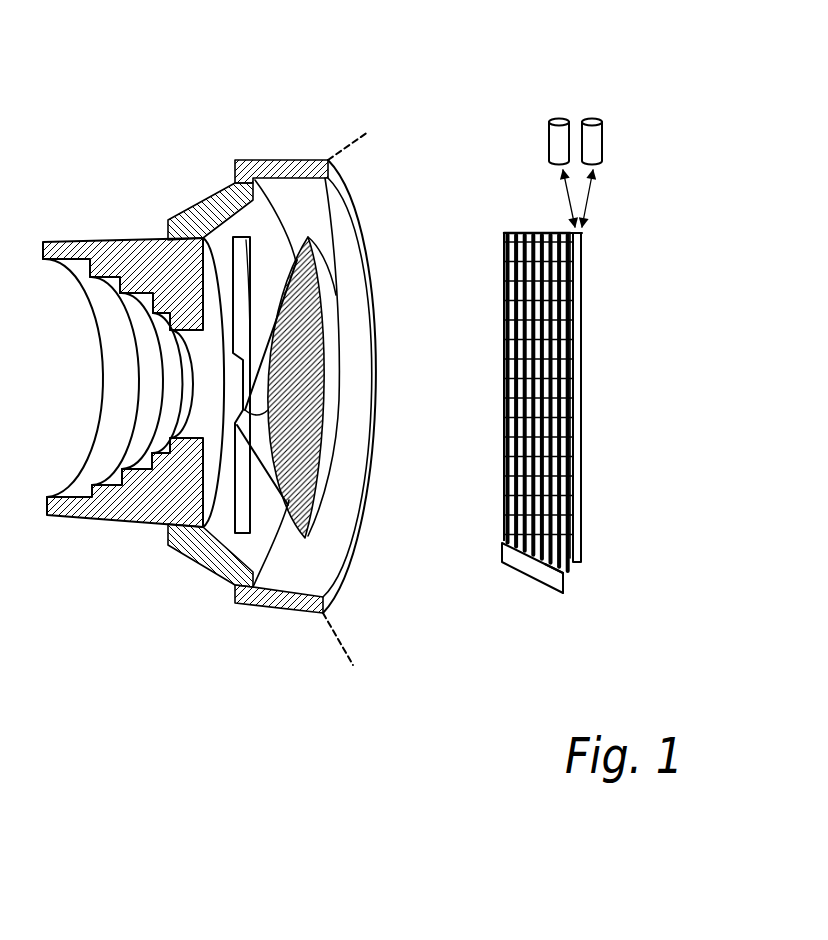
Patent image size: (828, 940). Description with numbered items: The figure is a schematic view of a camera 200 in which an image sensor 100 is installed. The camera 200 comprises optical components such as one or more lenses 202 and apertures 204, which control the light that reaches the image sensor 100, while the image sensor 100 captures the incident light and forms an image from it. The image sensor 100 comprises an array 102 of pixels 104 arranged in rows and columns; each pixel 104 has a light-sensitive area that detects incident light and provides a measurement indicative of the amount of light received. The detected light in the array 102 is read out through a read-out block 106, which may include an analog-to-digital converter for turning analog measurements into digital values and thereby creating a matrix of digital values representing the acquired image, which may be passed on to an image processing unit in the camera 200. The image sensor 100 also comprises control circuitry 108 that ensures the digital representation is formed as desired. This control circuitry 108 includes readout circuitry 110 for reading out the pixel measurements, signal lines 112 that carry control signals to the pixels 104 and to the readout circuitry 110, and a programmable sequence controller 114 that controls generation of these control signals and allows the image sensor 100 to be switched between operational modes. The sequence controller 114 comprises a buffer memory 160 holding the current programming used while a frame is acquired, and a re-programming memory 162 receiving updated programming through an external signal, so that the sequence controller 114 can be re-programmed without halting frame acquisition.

The image sensor 100 is at (500, 213).
The array 102 is at (503, 323).
The pixels 104 is at (584, 236).
The read-out block 106 is at (535, 578).
The control circuitry 108 is at (490, 540).
The readout circuitry 110 is at (560, 565).
The signal lines 112 is at (570, 323).
The sequence controller 114 is at (582, 382).
The buffer memory 160 is at (557, 120).
The re-programming memory 162 is at (597, 120).
The camera 200 is at (177, 98).
The lenses 202 is at (327, 468).
The apertures 204 is at (243, 527).